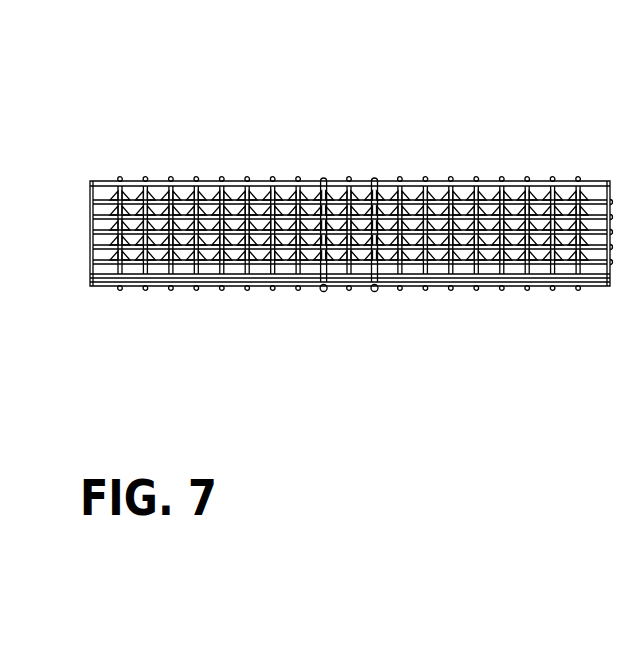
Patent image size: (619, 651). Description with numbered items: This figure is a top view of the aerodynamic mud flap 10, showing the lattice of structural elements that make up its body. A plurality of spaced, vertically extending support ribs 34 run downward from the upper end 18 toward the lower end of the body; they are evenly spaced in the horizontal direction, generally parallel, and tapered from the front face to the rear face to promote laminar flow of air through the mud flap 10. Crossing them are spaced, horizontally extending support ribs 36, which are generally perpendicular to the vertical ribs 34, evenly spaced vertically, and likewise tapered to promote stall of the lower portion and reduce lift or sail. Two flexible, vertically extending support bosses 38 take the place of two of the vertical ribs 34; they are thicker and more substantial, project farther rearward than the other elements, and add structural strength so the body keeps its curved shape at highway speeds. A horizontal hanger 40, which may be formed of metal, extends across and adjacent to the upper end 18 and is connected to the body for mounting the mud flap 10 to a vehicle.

The aerodynamic mud flap 10 is at (312, 124).
The upper end 18 is at (131, 265).
The vertically extending support ribs 34 is at (171, 182).
The horizontally extending support ribs 36 is at (593, 212).
The support bosses 38 is at (373, 180).
The horizontal hanger 40 is at (488, 288).